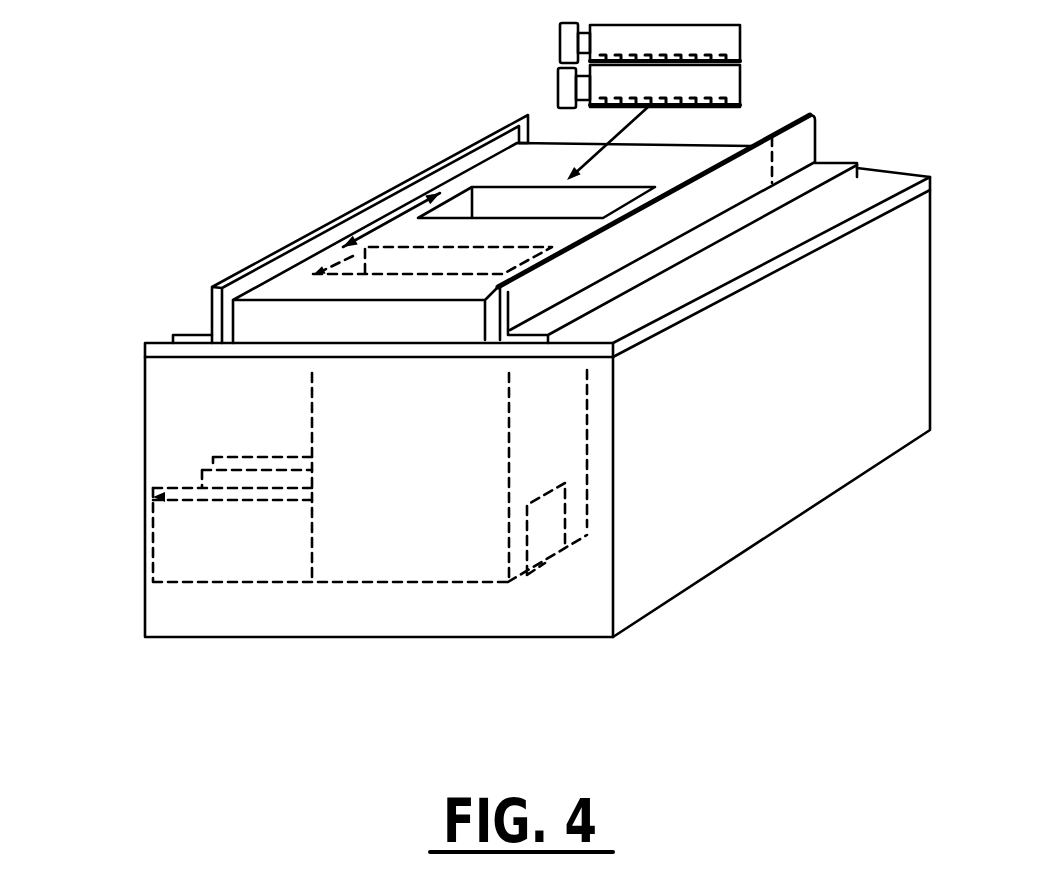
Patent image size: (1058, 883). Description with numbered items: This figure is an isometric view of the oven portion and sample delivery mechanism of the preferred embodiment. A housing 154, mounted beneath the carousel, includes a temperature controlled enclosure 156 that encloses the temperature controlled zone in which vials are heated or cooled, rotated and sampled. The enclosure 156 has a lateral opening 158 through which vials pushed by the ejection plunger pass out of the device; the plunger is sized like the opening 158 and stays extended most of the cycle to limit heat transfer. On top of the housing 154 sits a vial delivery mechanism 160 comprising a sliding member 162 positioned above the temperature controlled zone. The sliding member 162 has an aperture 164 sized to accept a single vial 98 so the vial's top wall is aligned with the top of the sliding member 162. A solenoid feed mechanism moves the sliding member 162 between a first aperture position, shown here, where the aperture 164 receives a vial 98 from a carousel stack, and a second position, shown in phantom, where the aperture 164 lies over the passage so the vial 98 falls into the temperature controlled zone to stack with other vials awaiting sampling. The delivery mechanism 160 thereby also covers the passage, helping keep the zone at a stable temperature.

The vial 98 is at (740, 48).
The housing 154 is at (702, 507).
The temperature controlled enclosure 156 is at (458, 548).
The lateral opening 158 is at (555, 545).
The vial delivery mechanism 160 is at (322, 198).
The sliding member 162 is at (258, 357).
The aperture 164 is at (462, 165).